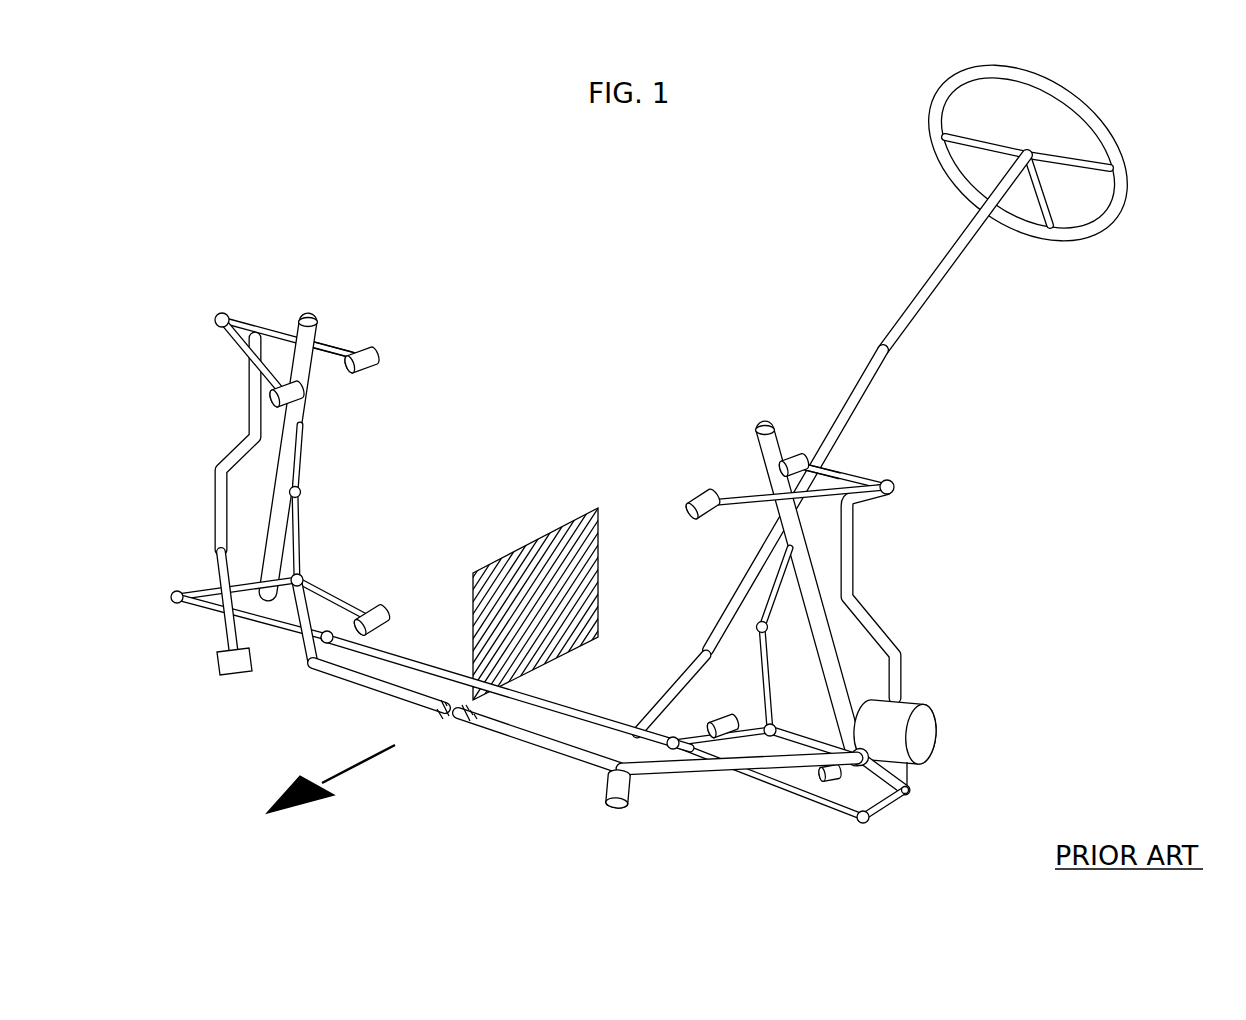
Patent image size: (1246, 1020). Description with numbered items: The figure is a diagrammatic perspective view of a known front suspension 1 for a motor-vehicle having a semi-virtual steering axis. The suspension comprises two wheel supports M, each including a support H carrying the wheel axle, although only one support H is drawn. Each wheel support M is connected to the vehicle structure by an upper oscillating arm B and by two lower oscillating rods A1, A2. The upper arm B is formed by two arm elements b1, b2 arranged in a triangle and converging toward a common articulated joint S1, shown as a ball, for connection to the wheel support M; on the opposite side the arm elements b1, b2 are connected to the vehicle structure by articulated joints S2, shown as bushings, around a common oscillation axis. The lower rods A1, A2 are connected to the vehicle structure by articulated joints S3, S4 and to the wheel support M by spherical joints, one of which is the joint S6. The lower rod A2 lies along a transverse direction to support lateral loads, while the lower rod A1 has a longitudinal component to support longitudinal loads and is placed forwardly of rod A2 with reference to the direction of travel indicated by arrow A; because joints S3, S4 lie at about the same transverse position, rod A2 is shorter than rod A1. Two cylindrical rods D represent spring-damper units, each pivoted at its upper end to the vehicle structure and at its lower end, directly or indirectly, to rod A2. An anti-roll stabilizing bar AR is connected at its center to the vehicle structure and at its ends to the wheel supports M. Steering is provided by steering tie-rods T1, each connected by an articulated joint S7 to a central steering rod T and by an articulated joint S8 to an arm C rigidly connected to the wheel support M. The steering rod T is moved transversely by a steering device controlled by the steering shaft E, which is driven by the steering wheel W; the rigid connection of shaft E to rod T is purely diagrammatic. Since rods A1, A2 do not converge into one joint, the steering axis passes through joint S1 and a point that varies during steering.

The front suspension 1 is at (422, 250).
The steering wheel W is at (1085, 249).
The steering shaft E is at (940, 278).
The upper oscillating arm B is at (282, 313).
The arm element b1 is at (334, 347).
The arm element b2 is at (237, 343).
The cylindrical rod D is at (315, 318).
The wheel support M is at (246, 432).
The support H is at (921, 702).
The arm C is at (192, 581).
The central steering rod T is at (585, 711).
The steering tie-rod T1 is at (272, 634).
The anti-roll stabilizing bar AR is at (534, 748).
The lower oscillating rod A1 is at (215, 637).
The lower oscillating rod A2 is at (351, 600).
The arrow A is at (331, 778).
The articulated joint S1 is at (216, 315).
The articulated joint S2 is at (371, 364).
The articulated joint S3 is at (230, 669).
The articulated joint S4 is at (383, 611).
The spherical joint S6 is at (910, 791).
The articulated joint S7 is at (314, 669).
The articulated joint S8 is at (171, 601).